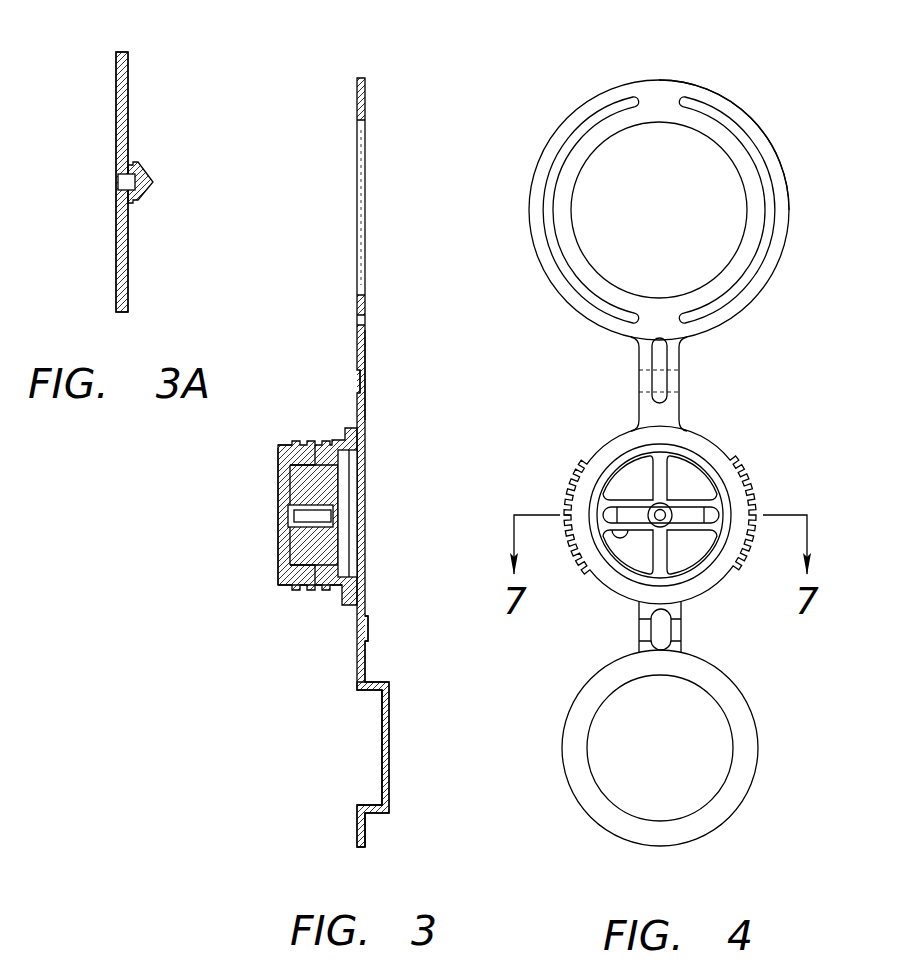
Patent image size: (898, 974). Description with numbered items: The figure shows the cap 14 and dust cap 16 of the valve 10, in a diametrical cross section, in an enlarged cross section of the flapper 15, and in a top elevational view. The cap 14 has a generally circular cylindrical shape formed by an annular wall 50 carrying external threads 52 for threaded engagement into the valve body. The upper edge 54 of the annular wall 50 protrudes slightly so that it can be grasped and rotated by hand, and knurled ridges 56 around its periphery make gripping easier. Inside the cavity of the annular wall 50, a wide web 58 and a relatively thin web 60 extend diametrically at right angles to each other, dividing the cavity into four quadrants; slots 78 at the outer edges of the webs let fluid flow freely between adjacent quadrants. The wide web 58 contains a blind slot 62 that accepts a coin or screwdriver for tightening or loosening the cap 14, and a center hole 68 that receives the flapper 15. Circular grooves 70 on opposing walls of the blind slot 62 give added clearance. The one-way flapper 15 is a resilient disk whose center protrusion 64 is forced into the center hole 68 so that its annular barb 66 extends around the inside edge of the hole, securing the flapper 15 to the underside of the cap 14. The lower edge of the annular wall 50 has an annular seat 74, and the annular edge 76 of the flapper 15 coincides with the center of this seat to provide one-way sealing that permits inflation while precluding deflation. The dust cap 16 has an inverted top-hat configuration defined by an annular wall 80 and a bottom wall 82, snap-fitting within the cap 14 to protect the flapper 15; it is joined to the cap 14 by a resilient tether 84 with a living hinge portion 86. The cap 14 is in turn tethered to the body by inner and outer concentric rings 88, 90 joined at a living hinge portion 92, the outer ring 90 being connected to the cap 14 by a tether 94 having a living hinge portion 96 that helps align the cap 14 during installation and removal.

In FIG. 3, the valve 10 is at (432, 106).
In FIG. 4, the valve 10 is at (794, 96).
In FIG. 3, the cap 14 is at (412, 439).
In FIG. 3A, the flapper 15 is at (116, 128).
In FIG. 3, the dust cap 16 is at (345, 752).
In FIG. 3, the annular wall 50 is at (330, 592).
In FIG. 3, the external threads 52 is at (300, 590).
In FIG. 3, the upper edge 54 is at (366, 578).
In FIG. 4, the knurled ridges 56 is at (762, 507).
In FIG. 4, the web 58 is at (614, 541).
In FIG. 3, the web 60 is at (290, 545).
In FIG. 4, the web 60 is at (652, 551).
In FIG. 4, the blind slot 62 is at (692, 513).
In FIG. 3A, the center protrusion 64 is at (152, 184).
In FIG. 3A, the annular barb 66 is at (133, 165).
In FIG. 3, the center hole 68 is at (288, 515).
In FIG. 4, the center hole 68 is at (661, 505).
In FIG. 4, the circular grooves 70 is at (657, 507).
In FIG. 3, the annular seat 74 is at (282, 445).
In FIG. 3A, the annular edge 76 is at (128, 56).
In FIG. 3, the slots 78 is at (284, 458).
In FIG. 3, the annular wall 80 is at (368, 830).
In FIG. 3, the bottom wall 82 is at (390, 770).
In FIG. 4, the bottom wall 82 is at (660, 748).
In FIG. 3, the tether 84 is at (365, 662).
In FIG. 4, the tether 84 is at (682, 640).
In FIG. 3, the living hinge portion 86 is at (368, 630).
In FIG. 4, the living hinge portion 86 is at (677, 628).
In FIG. 4, the inner concentric ring 88 is at (745, 258).
In FIG. 3, the outer concentric ring 90 is at (365, 206).
In FIG. 4, the outer concentric ring 90 is at (783, 212).
In FIG. 4, the living hinge portion 92 is at (655, 95).
In FIG. 3, the tether 94 is at (365, 395).
In FIG. 4, the tether 94 is at (680, 365).
In FIG. 3, the living hinge portion 96 is at (358, 382).
In FIG. 4, the living hinge portion 96 is at (640, 380).